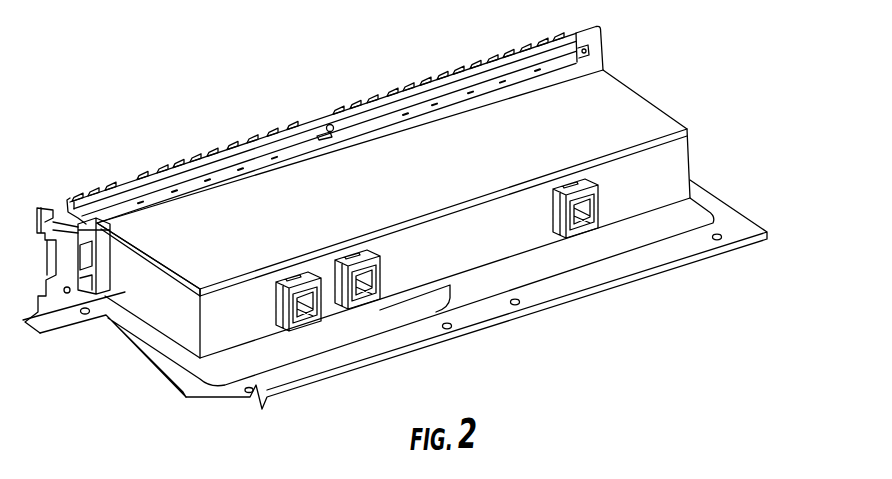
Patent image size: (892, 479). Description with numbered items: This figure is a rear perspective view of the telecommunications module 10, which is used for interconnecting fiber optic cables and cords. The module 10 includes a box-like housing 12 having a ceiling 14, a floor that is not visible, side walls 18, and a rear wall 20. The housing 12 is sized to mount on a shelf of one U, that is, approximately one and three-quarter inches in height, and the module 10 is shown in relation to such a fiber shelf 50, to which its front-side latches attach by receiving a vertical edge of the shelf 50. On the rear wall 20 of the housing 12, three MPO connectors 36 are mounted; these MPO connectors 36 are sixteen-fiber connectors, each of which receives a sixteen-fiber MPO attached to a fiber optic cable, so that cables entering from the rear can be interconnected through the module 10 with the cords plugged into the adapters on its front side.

The telecommunications module 10 is at (437, 238).
The housing 12 is at (395, 217).
The ceiling 14 is at (621, 103).
The side walls 18 is at (372, 225).
The rear wall 20 is at (440, 258).
The MPO connectors 36 is at (283, 326).
The fiber shelf 50 is at (593, 277).